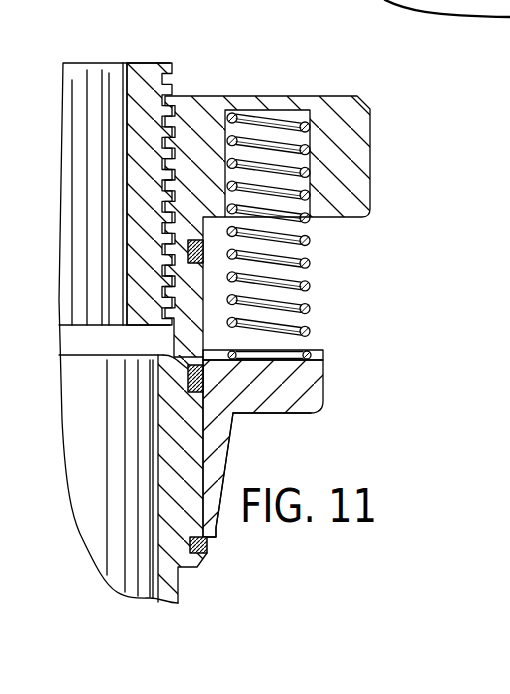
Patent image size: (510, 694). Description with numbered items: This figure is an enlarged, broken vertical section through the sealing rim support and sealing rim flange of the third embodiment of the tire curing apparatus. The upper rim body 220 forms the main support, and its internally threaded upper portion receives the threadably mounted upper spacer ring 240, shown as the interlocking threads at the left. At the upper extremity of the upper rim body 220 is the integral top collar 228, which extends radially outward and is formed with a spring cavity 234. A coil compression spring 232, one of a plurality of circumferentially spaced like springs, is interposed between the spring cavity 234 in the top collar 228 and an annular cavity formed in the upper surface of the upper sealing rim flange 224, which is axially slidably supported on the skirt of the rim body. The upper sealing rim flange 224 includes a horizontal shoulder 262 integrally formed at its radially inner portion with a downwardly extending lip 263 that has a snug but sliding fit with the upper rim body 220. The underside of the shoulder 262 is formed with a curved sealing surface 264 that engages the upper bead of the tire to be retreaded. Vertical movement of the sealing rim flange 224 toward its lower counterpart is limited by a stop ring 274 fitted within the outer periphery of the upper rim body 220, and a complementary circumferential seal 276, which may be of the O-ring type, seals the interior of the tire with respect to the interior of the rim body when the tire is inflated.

The upper rim body 220 is at (183, 589).
The upper sealing rim flange 224 is at (328, 376).
The top collar 228 is at (357, 173).
The coil compression spring 232 is at (306, 260).
The spring cavity 234 is at (239, 120).
The upper spacer ring 240 is at (152, 62).
The horizontal shoulder 262 is at (307, 392).
The downwardly extending lip 263 is at (216, 458).
The curved sealing surface 264 is at (300, 413).
The stop ring 274 is at (209, 548).
The circumferential seal 276 is at (123, 347).